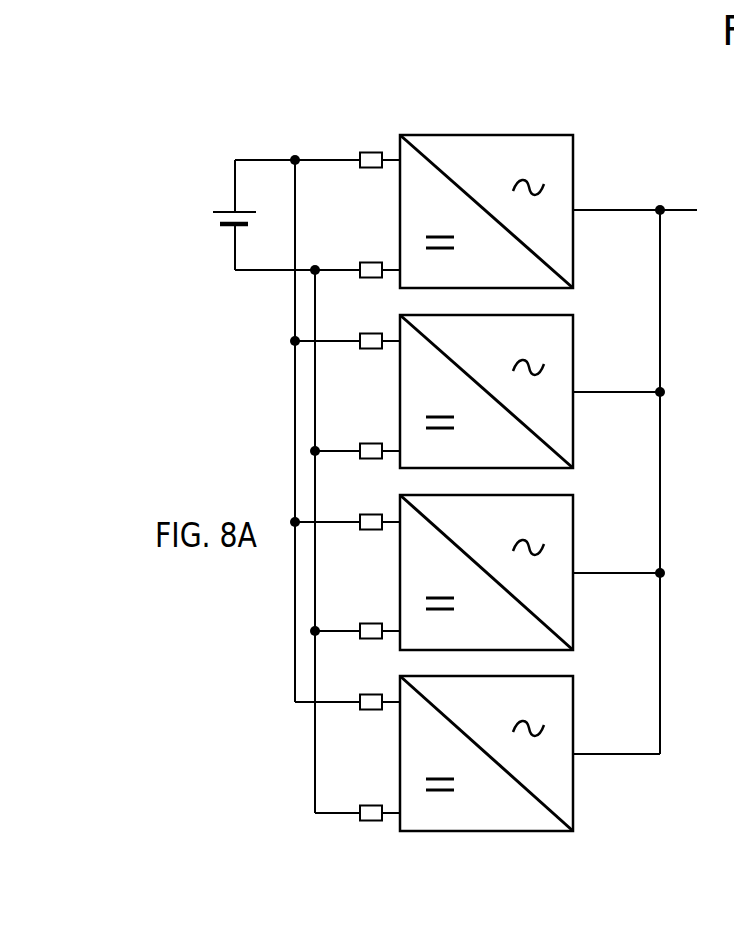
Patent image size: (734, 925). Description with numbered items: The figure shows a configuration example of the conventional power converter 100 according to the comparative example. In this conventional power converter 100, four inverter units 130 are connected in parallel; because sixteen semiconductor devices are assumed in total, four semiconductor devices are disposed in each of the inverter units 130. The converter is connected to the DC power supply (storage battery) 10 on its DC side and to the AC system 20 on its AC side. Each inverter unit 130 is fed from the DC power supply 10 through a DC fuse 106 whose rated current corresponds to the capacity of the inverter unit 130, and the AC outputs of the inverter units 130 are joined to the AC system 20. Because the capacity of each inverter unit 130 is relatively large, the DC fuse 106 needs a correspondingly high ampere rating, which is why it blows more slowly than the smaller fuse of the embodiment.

The conventional power converter 100 is at (518, 86).
The DC power supply (storage battery) 10 is at (210, 218).
The DC fuse 106 is at (374, 152).
The inverter unit 130 is at (573, 157).
The AC system 20 is at (710, 196).